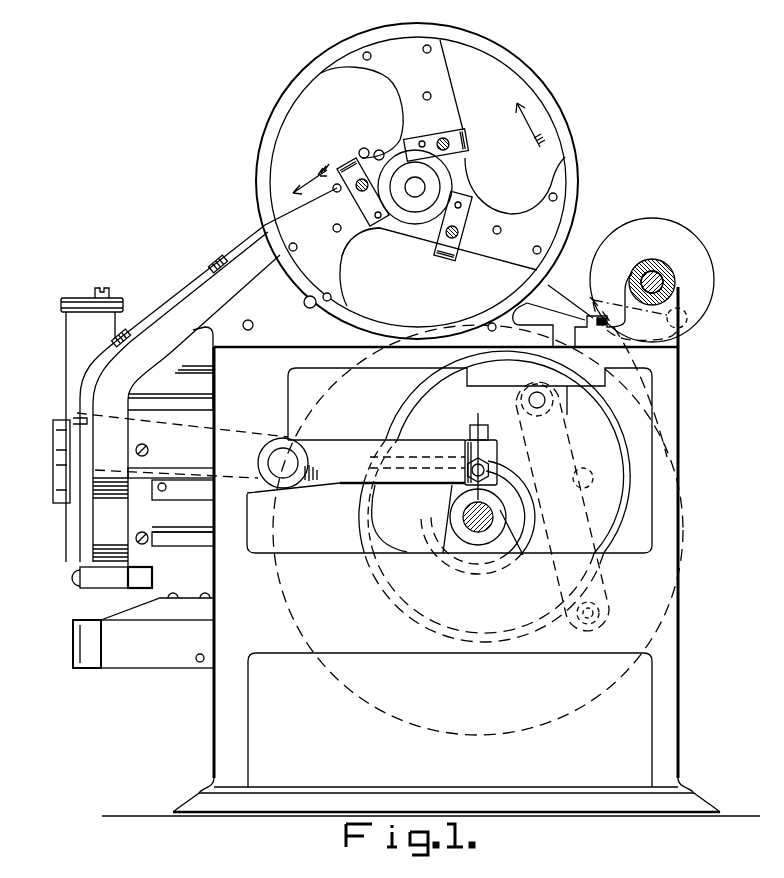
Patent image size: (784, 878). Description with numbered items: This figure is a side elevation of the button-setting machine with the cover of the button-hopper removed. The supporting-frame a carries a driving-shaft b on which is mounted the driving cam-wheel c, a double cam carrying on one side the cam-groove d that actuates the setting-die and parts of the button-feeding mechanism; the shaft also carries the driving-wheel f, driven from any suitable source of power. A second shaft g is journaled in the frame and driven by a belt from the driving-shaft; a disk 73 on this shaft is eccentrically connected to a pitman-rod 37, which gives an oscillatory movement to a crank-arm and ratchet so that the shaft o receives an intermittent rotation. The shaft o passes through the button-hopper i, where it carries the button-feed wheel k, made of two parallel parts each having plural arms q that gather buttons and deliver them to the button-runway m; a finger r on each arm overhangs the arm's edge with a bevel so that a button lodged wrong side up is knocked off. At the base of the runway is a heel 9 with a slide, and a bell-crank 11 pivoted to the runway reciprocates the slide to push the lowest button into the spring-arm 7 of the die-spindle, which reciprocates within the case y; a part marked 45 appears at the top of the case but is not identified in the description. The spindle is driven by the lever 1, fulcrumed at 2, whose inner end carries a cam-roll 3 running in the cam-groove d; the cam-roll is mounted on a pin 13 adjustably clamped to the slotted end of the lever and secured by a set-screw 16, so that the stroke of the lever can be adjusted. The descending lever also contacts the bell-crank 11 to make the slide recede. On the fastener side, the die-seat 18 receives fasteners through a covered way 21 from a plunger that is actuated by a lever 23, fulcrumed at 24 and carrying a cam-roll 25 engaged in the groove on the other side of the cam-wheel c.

The supporting-frame a is at (431, 544).
The driving-wheel f is at (450, 720).
The case y is at (82, 430).
The cap nut of cylinder 45 is at (101, 289).
The button-runway m is at (210, 375).
The bell-crank 11 is at (68, 478).
The heel 9 is at (116, 579).
The spring-arm 7 is at (74, 579).
The covered way 21 is at (157, 630).
The die-seat 18 is at (78, 618).
The lever 1 is at (318, 433).
The fulcrum 2 is at (283, 445).
The driving cam-wheel c is at (494, 496).
The driving-shaft b is at (463, 517).
The set-screw 16 is at (488, 448).
The pin 13 is at (461, 484).
The cam-roll 3 is at (480, 451).
The cam-groove d is at (510, 482).
The fulcrum 24 is at (539, 397).
The cam-roll 25 is at (593, 478).
The lever 23 is at (602, 580).
The pitman-rod 37 is at (560, 302).
The disk 73 is at (714, 279).
The shaft g is at (673, 283).
The arms q is at (417, 181).
The button-feed wheel k is at (361, 242).
The shaft o is at (415, 187).
The finger r is at (468, 232).
The button-hopper i is at (311, 168).